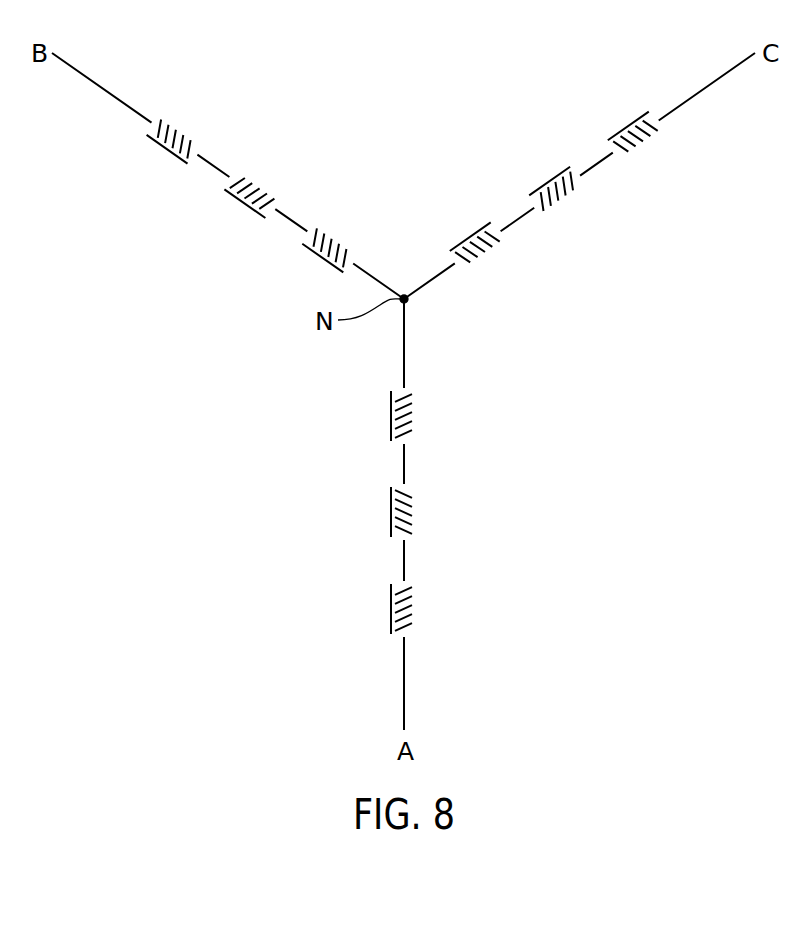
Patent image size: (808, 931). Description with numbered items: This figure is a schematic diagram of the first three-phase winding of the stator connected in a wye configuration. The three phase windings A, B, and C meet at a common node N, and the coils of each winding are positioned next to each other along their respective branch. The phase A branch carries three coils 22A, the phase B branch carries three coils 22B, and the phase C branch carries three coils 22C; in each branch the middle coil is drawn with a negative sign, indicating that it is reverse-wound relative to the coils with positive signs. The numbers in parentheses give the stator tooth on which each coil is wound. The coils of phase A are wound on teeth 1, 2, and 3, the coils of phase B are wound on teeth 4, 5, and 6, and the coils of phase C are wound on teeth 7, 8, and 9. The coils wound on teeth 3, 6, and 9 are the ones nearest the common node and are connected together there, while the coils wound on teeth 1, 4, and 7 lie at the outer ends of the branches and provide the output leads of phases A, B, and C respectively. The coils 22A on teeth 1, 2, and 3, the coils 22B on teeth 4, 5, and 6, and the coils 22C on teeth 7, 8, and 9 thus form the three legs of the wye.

The phase A coil 22A is at (367, 514).
The phase B coil 22B is at (228, 176).
The phase C coil 22C is at (579, 176).
The tooth 1 is at (371, 609).
The tooth 2 is at (367, 512).
The tooth 3 is at (371, 416).
The tooth 4 is at (194, 132).
The tooth 5 is at (275, 190).
The tooth 6 is at (346, 237).
The tooth 7 is at (610, 125).
The tooth 8 is at (530, 185).
The tooth 9 is at (459, 231).